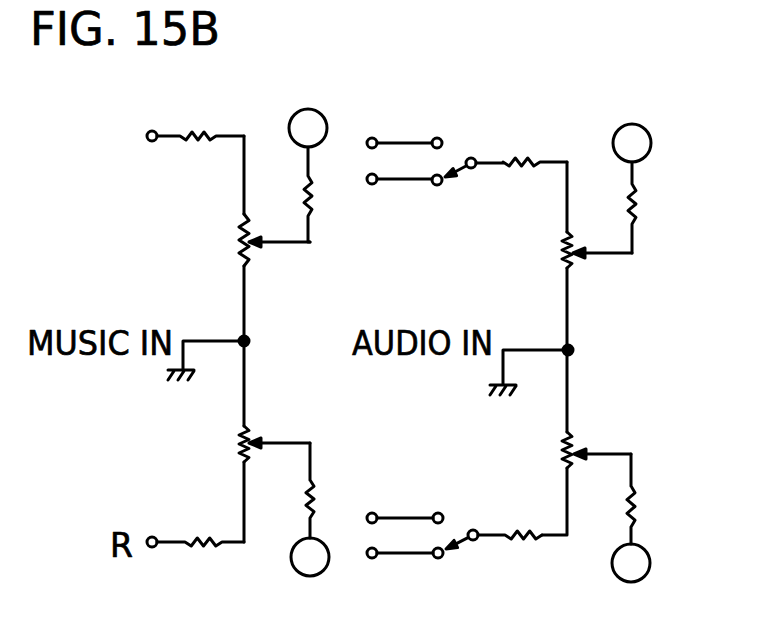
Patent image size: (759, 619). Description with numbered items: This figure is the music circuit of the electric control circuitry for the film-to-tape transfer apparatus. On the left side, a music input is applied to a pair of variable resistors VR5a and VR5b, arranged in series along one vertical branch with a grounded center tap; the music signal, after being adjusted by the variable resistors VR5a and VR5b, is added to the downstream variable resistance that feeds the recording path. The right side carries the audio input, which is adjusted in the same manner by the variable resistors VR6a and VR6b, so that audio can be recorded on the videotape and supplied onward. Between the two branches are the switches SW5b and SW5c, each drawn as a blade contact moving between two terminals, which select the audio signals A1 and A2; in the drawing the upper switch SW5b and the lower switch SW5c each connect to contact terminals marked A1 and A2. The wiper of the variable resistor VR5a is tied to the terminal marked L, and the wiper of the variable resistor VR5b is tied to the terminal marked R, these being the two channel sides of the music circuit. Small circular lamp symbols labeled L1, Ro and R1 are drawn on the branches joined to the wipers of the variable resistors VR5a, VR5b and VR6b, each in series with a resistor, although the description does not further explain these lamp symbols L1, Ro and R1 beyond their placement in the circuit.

The variable resistor VR5a is at (229, 240).
The variable resistor VR5b is at (229, 448).
The variable resistor VR6a is at (552, 253).
The variable resistor VR6b is at (549, 451).
The switch SW5b is at (487, 192).
The switch SW5c is at (481, 511).
The left channel lamp L1 is at (311, 118).
The right channel lamp R1 is at (633, 572).
The right output lamp Ro is at (307, 553).
The audio signal A1 is at (388, 378).
The audio signal A2 is at (384, 326).
The left channel terminal L is at (335, 238).
The right channel terminal R is at (356, 450).